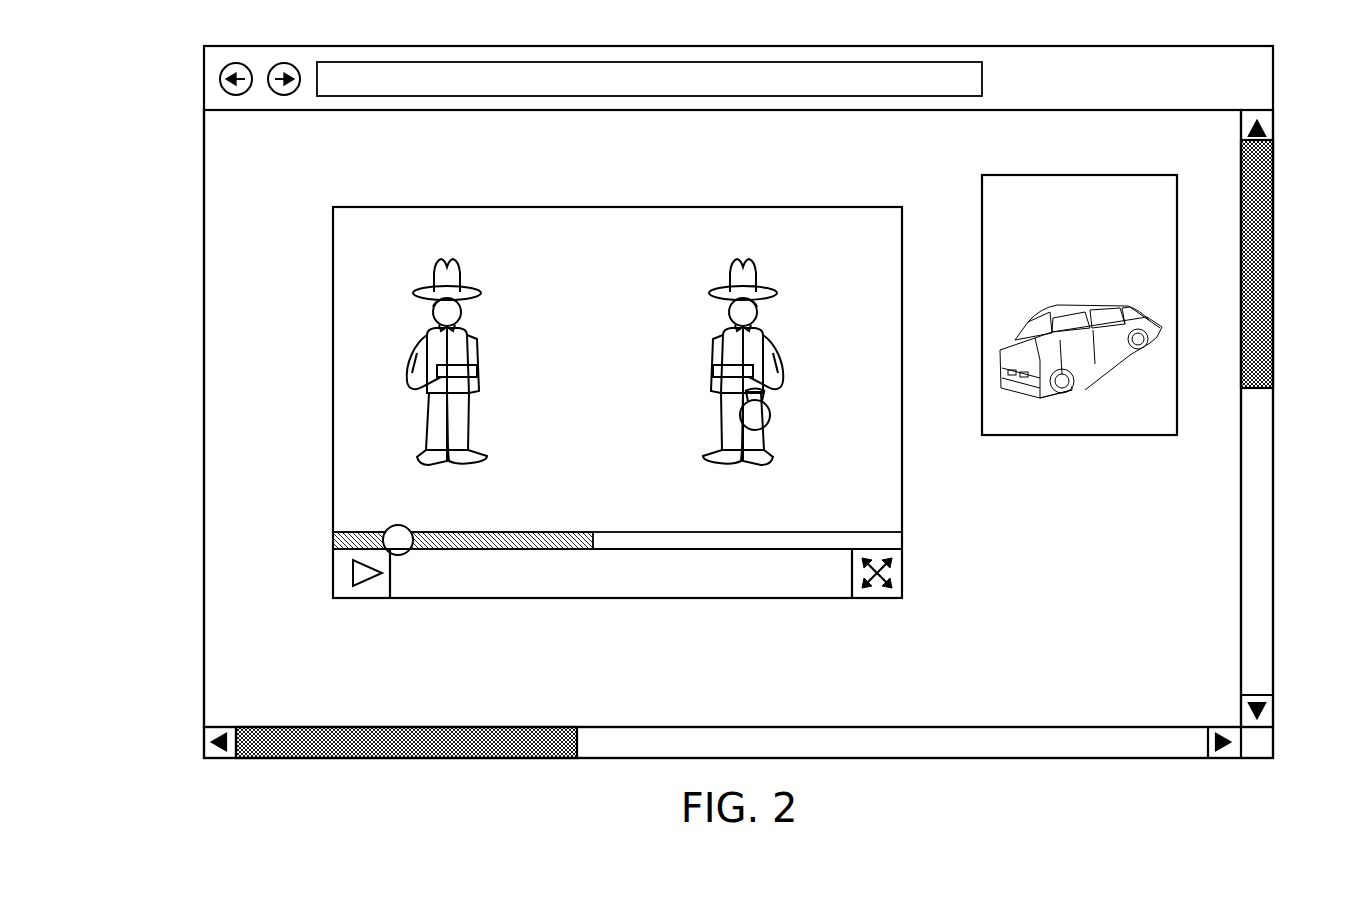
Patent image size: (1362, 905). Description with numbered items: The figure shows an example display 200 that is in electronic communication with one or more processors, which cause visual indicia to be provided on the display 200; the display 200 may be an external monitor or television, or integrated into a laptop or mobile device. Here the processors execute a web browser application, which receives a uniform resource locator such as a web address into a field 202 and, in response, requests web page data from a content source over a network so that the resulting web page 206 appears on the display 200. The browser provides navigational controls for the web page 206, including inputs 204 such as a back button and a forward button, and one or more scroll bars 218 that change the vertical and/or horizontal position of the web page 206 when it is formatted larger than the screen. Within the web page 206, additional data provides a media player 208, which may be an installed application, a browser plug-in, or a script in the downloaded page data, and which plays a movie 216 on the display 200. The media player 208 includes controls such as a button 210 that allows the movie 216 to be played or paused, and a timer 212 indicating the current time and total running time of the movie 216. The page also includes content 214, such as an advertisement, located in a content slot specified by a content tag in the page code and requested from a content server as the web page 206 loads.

The display 200 is at (204, 228).
The field 202 is at (445, 78).
The inputs 204 is at (234, 63).
The web page 206 is at (231, 377).
The media player 208 is at (582, 408).
The button 210 is at (378, 589).
The timer 212 is at (511, 589).
The content 214 is at (1163, 193).
The movie 216 is at (603, 272).
The scroll bars 218 is at (1274, 249).